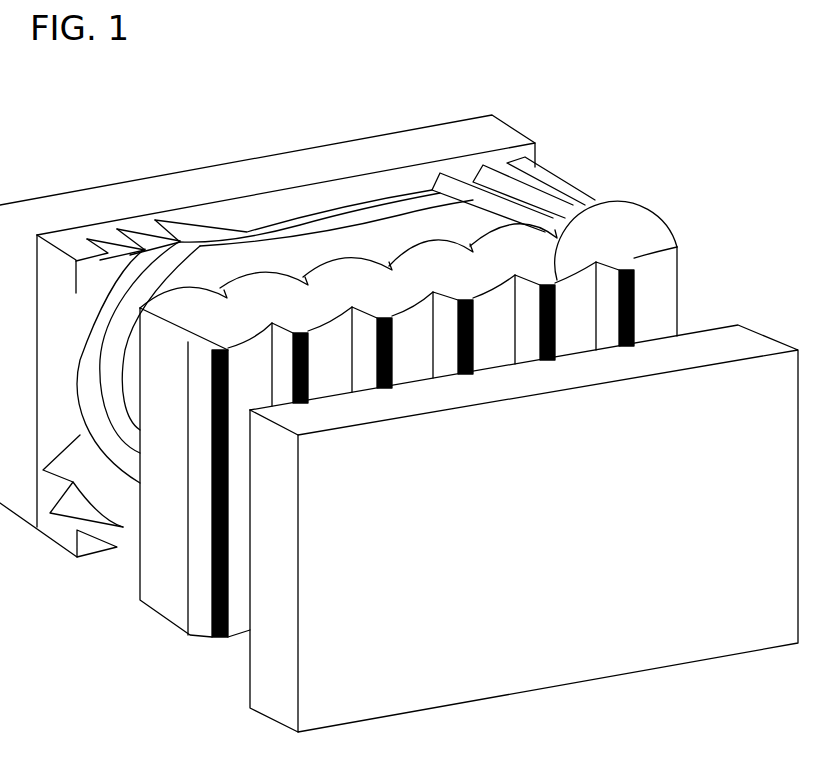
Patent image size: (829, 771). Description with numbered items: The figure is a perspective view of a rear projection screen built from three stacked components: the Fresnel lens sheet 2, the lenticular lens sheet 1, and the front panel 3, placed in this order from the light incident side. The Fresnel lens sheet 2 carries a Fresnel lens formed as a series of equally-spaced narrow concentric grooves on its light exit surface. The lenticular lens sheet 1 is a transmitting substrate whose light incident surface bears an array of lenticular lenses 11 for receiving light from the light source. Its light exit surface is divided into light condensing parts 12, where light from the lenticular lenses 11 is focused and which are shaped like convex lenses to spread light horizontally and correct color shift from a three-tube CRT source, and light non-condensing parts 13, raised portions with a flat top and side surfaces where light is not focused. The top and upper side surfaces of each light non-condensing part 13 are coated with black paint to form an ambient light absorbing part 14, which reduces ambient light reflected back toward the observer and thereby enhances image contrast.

The lenticular lens sheet 1 is at (628, 230).
The Fresnel lens sheet 2 is at (412, 140).
The front panel 3 is at (742, 332).
The lenticular lens 11 is at (592, 208).
The light condensing part 12 is at (662, 255).
The light non-condensing part 13 is at (200, 627).
The ambient light absorbing part 14 is at (222, 638).